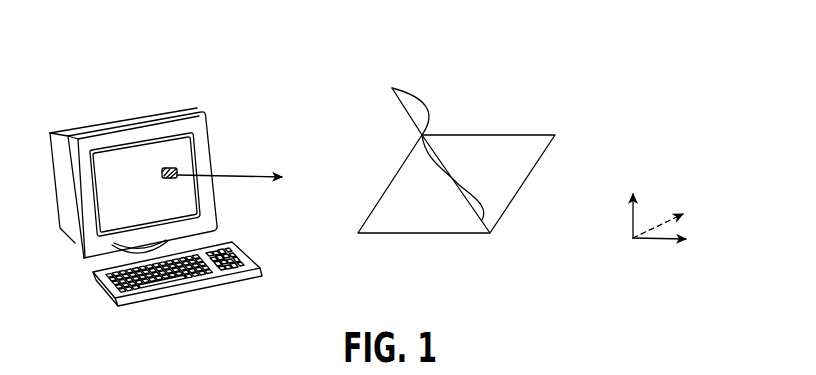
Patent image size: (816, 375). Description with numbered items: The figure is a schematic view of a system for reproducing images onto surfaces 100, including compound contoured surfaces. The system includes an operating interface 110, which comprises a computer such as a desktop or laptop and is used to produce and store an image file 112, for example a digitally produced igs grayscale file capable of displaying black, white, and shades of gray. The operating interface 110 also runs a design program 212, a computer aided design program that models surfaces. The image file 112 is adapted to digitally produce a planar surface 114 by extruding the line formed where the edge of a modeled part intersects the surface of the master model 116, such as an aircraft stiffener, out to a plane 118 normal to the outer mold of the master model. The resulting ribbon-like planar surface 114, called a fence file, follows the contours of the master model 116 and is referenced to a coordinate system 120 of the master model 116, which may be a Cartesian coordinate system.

The system for reproducing images onto surfaces 100 is at (543, 41).
The operating interface 110 is at (133, 124).
The image file 112 is at (541, 104).
The planar surface 114 is at (416, 104).
The master model 116 is at (502, 176).
The plane 118 is at (417, 125).
The coordinate system 120 is at (668, 188).
The design program 212 is at (178, 172).